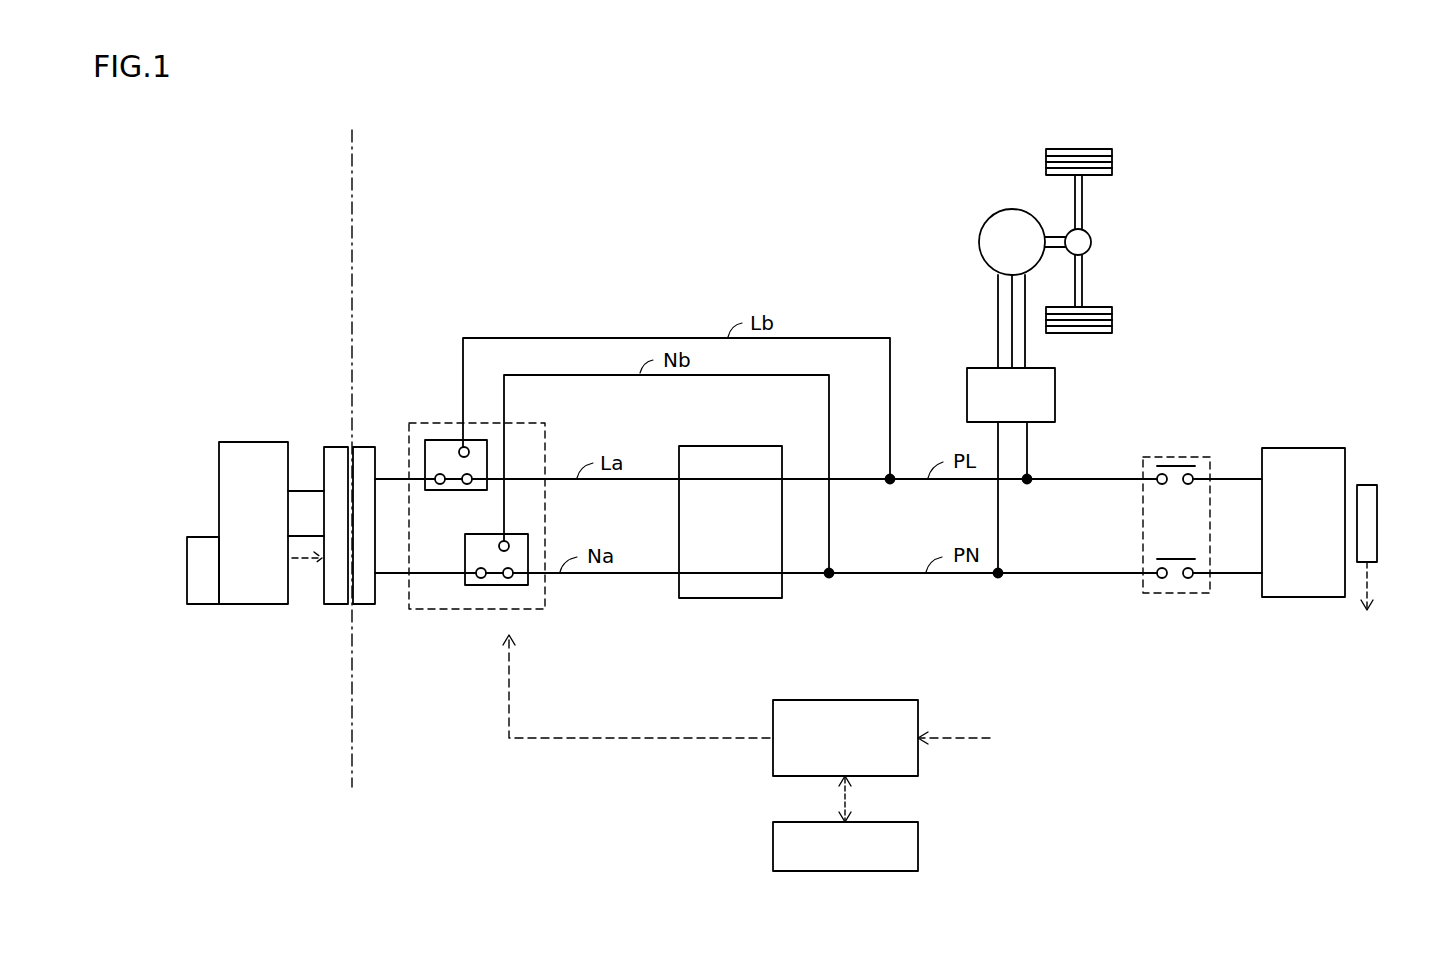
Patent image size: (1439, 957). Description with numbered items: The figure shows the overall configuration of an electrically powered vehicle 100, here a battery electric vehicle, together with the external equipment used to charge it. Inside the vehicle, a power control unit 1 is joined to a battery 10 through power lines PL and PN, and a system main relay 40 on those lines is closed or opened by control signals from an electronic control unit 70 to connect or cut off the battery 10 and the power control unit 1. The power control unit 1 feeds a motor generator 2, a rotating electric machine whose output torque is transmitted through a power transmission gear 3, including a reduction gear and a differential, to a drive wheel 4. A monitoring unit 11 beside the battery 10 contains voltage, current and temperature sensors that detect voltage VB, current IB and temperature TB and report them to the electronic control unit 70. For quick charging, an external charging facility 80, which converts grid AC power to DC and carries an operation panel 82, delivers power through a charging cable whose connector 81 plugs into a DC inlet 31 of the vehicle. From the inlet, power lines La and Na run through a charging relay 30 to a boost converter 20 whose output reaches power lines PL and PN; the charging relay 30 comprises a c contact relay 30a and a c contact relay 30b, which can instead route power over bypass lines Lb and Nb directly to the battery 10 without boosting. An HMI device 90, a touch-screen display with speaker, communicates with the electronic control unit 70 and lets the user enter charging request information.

The power control unit 1 is at (1047, 365).
The motor generator 2 is at (1012, 210).
The power transmission gear 3 is at (1093, 238).
The drive wheel 4 is at (1100, 148).
The battery 10 is at (1313, 447).
The monitoring unit 11 is at (1368, 483).
The boost converter 20 is at (754, 444).
The charging relay 30 is at (495, 516).
The c contact relay 30a is at (437, 440).
The c contact relay 30b is at (467, 586).
The DC inlet 31 is at (362, 607).
The system main relay 40 is at (1178, 457).
The electronic control unit 70 is at (899, 697).
The external charging facility 80 is at (240, 442).
The connector 81 is at (323, 602).
The operation panel 82 is at (185, 602).
The HMI device 90 is at (802, 820).
The electrically powered vehicle 100 is at (1298, 205).